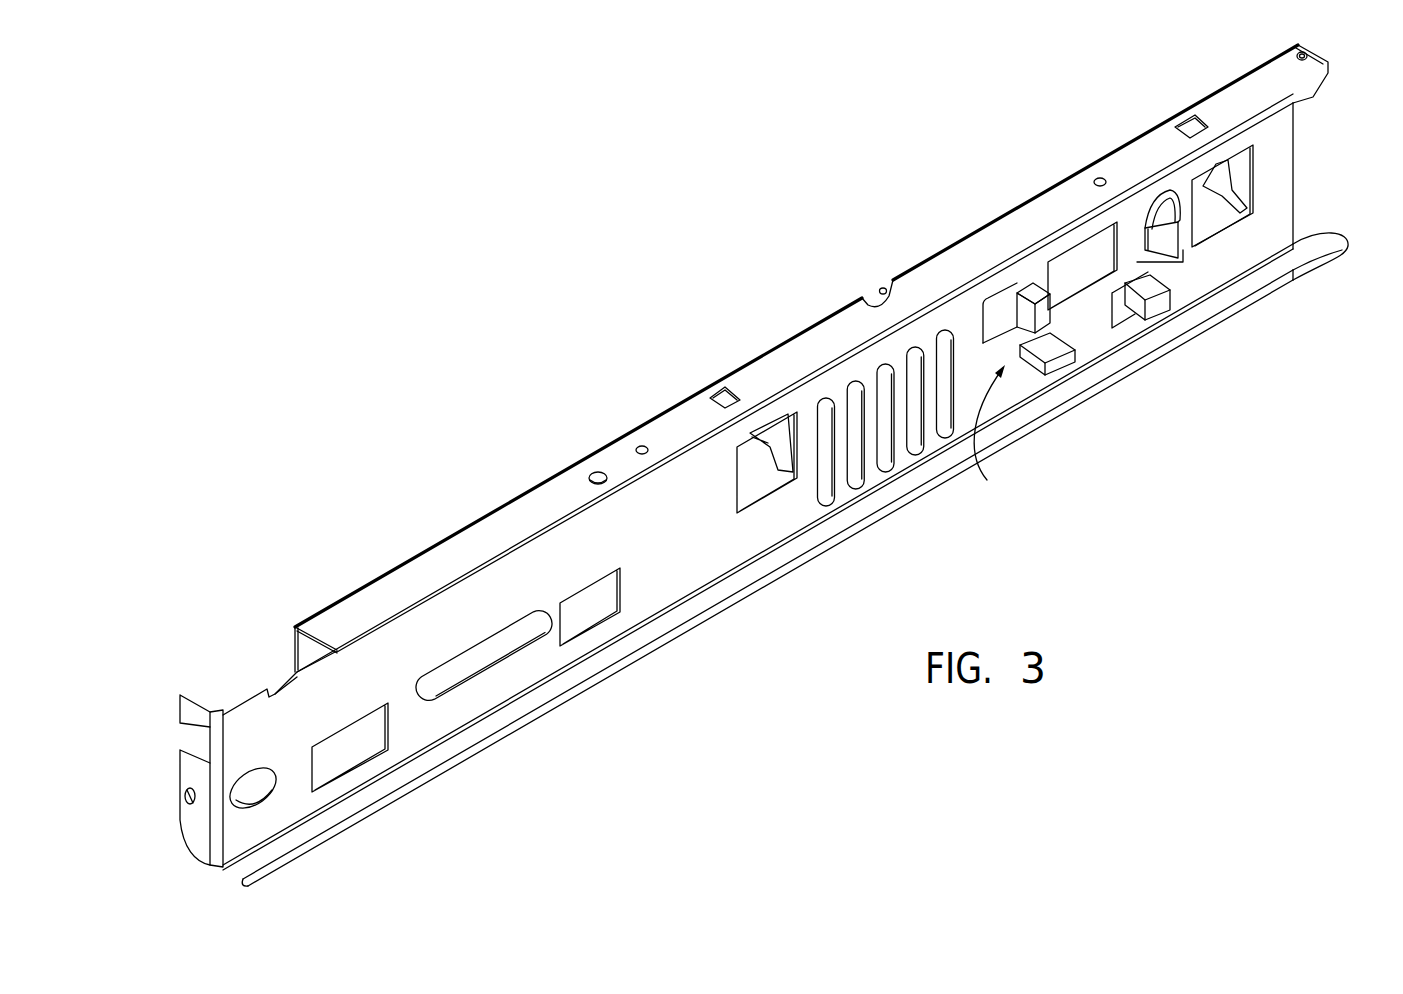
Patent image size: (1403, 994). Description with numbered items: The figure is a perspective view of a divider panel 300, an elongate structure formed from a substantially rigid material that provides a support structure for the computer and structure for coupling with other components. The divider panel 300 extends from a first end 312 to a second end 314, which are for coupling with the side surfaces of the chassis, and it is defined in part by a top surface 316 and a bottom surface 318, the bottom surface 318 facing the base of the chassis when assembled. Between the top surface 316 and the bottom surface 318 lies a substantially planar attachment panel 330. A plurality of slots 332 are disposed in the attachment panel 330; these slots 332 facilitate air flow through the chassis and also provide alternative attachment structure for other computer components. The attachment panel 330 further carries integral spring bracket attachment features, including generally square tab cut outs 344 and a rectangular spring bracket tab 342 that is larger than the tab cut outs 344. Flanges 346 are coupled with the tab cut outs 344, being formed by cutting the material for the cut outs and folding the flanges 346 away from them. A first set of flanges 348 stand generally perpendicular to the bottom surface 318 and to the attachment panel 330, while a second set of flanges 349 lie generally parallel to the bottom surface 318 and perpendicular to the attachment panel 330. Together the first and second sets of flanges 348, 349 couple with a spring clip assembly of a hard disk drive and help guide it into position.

The divider panel 300 is at (733, 307).
The first end 312 is at (1295, 165).
The second end 314 is at (195, 773).
The top surface 316 is at (552, 498).
The bottom surface 318 is at (653, 628).
The attachment panel 330 is at (700, 550).
The slots 332 is at (951, 438).
The spring bracket tab 342 is at (1073, 262).
The tab cut outs 344 is at (993, 317).
The flanges 346 is at (1177, 250).
The first set of flanges 348 is at (1153, 237).
The second set of flanges 349 is at (1123, 307).